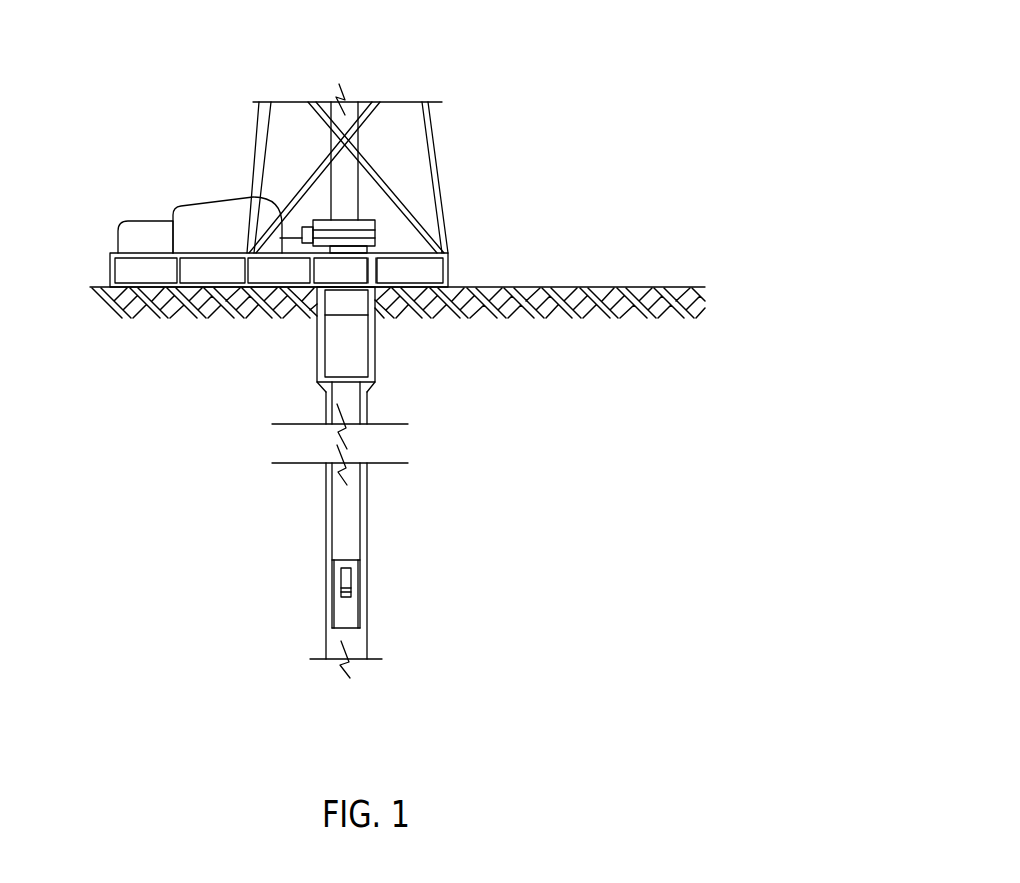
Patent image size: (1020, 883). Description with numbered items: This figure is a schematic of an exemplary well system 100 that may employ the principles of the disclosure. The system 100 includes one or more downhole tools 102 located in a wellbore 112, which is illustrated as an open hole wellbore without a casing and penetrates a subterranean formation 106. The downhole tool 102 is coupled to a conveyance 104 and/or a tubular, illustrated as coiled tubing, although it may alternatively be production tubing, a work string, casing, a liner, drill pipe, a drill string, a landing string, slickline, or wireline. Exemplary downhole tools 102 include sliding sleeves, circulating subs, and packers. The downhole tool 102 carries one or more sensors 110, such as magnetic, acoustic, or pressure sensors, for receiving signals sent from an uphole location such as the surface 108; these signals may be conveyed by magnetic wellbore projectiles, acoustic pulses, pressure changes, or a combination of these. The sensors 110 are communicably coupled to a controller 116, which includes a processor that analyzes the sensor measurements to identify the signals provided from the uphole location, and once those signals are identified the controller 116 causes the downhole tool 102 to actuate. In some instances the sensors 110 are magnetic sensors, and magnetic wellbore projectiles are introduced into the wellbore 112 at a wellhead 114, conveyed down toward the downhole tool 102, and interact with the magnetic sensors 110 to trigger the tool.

The system 100 is at (121, 51).
The downhole tool 102 is at (331, 510).
The conveyance 104 is at (360, 139).
The subterranean formation 106 is at (557, 443).
The surface 108 is at (396, 234).
The sensor 110 is at (341, 575).
The wellbore 112 is at (367, 481).
The wellhead 114 is at (327, 219).
The controller 116 is at (363, 584).